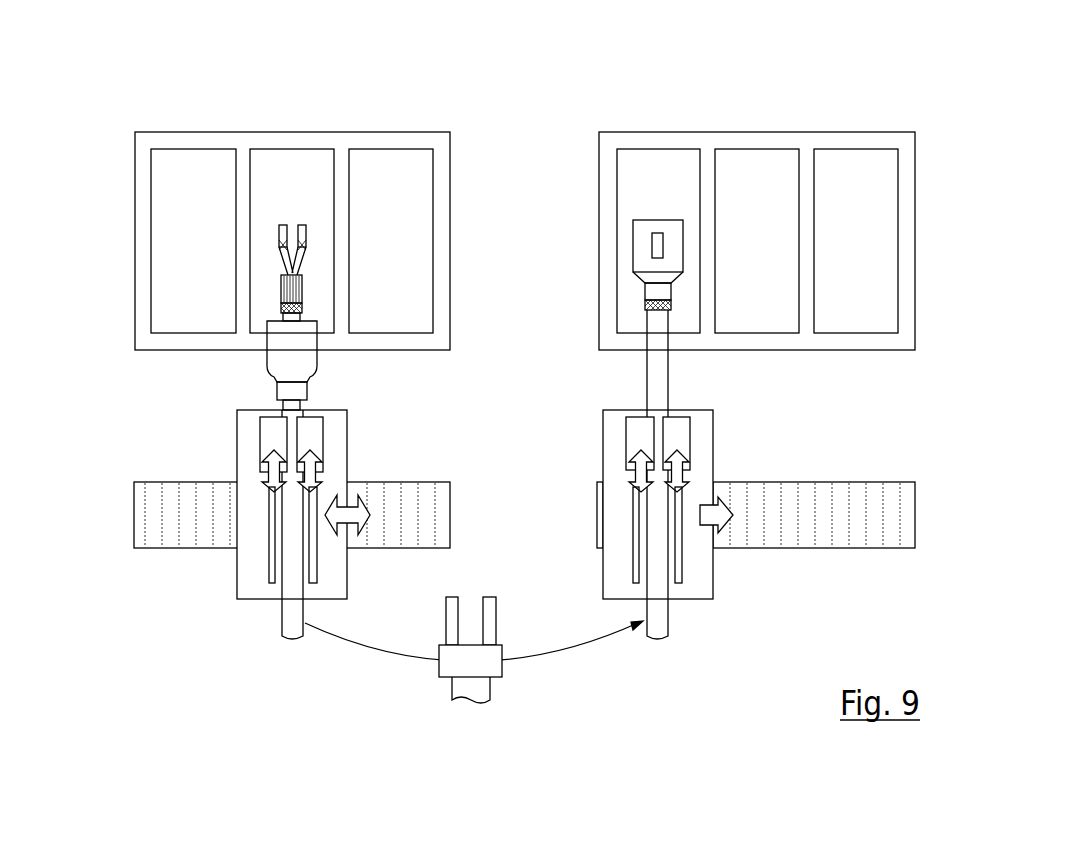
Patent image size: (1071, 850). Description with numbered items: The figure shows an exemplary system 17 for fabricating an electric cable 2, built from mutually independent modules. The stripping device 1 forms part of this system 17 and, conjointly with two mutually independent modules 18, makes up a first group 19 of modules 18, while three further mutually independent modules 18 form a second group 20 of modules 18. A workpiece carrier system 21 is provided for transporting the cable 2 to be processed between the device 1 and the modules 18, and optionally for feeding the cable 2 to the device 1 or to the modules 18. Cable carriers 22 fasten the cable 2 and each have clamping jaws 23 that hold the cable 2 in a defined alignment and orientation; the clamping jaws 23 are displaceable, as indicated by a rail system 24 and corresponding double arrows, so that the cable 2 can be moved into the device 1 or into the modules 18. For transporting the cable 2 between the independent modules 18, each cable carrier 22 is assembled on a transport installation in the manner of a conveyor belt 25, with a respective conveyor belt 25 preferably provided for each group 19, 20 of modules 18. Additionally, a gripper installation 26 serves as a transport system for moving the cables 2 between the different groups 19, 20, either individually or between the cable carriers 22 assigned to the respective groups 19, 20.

The system 17 is at (116, 80).
The device 1 is at (200, 256).
The module 18 is at (308, 202).
The first group 19 is at (450, 232).
The second group 20 is at (599, 289).
The workpiece carrier system 21 is at (125, 448).
The cable carrier 22 is at (347, 582).
The clamping jaws 23 is at (270, 425).
The rail system 24 is at (268, 572).
The conveyor belt 25 is at (423, 493).
The electric cable 2 is at (276, 628).
The gripper installation 26 is at (518, 683).